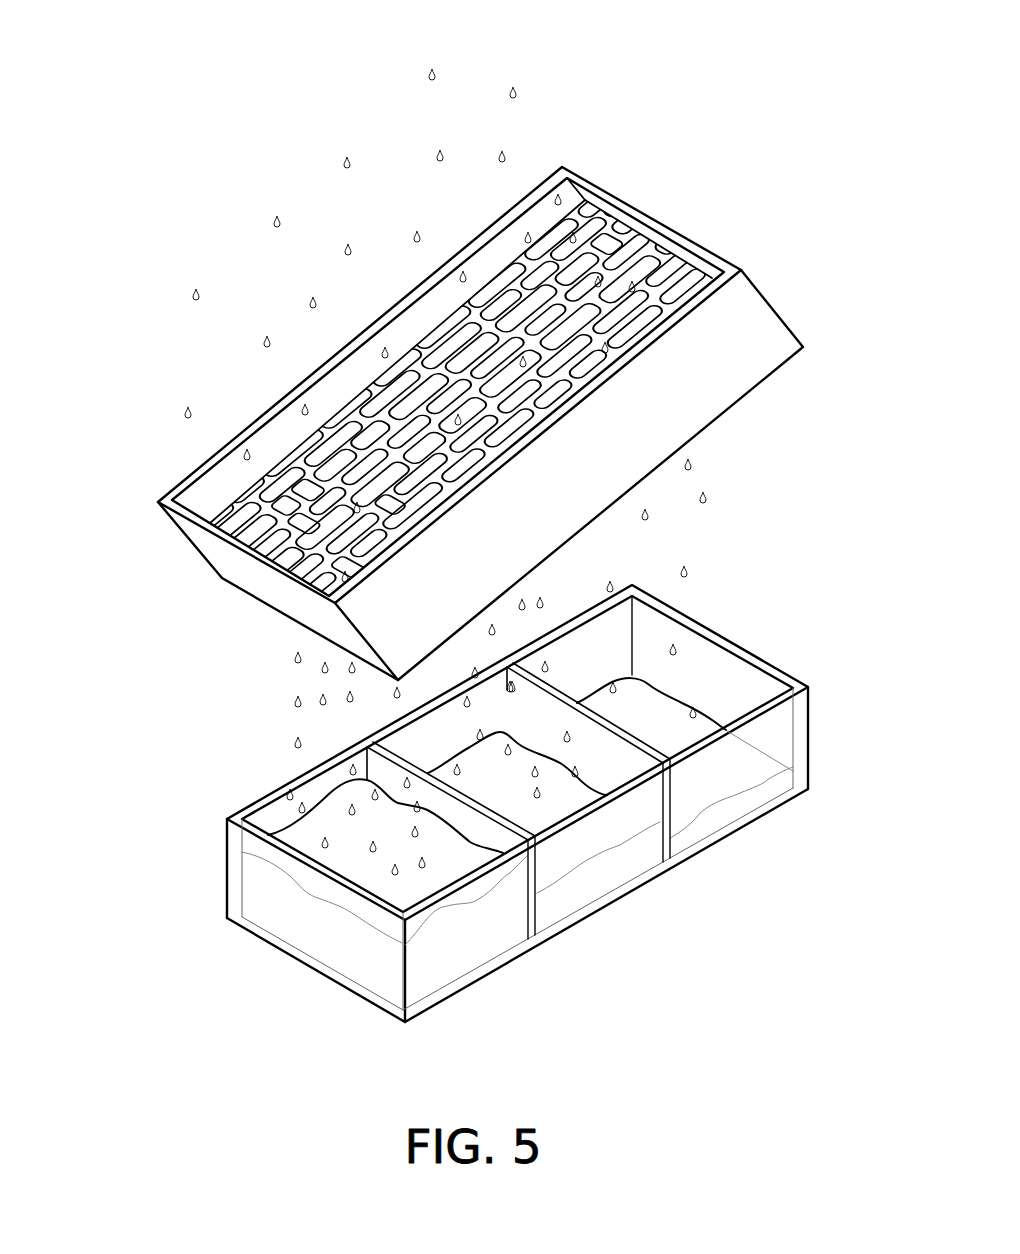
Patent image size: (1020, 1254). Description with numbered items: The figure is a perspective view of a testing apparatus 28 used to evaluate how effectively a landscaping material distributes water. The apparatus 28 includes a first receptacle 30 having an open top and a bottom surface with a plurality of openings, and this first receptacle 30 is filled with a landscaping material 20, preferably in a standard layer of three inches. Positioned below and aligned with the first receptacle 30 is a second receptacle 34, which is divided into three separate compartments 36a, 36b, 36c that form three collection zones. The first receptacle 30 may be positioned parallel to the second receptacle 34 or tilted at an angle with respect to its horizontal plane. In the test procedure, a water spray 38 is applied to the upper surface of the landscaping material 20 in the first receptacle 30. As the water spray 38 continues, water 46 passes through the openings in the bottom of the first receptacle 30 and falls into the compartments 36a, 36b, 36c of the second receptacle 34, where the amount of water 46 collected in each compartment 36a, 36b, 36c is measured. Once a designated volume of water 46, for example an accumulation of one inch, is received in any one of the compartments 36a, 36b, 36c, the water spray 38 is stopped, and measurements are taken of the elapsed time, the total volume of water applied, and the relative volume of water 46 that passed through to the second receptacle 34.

The landscaping material 20 is at (616, 238).
The testing apparatus 28 is at (785, 197).
The first receptacle 30 is at (755, 323).
The second receptacle 34 is at (800, 743).
The first compartment 36a is at (447, 862).
The second compartment 36b is at (563, 800).
The third compartment 36c is at (730, 686).
The water spray 38 is at (480, 47).
The water 46 is at (723, 433).